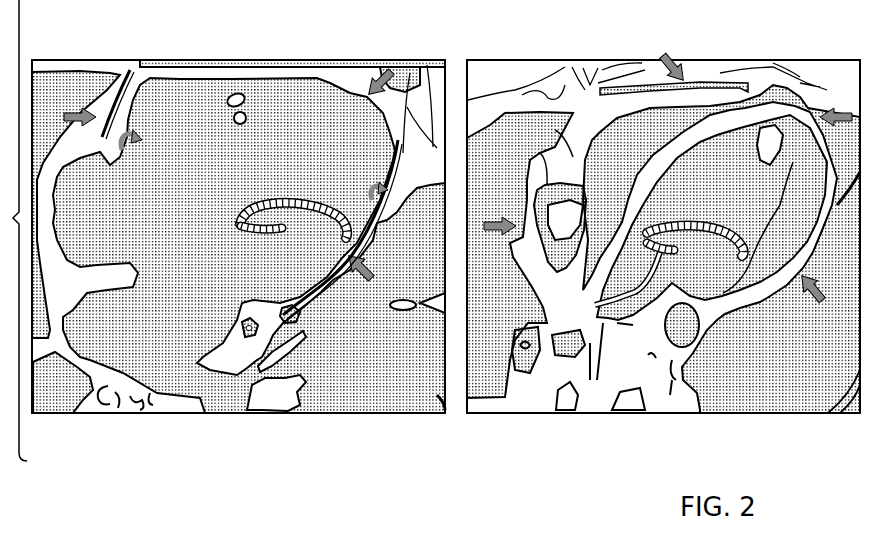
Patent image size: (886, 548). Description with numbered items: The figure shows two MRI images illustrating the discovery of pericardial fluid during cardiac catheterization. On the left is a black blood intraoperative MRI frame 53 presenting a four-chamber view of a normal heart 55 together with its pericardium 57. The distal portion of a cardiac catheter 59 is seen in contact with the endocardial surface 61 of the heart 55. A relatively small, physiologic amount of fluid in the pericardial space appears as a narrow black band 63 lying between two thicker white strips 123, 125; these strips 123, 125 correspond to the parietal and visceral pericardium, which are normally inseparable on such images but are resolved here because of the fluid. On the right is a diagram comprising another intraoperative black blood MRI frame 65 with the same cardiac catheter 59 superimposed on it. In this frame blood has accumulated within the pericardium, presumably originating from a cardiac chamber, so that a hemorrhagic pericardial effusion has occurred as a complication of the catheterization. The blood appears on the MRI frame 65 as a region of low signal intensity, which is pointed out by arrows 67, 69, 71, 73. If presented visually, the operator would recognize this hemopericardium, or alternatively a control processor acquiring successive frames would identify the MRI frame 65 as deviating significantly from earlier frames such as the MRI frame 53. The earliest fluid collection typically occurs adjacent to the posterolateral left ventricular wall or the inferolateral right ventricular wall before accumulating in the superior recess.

The black blood intraoperative MRI frame 53 is at (126, 430).
The heart 55 is at (276, 77).
The pericardium 57 is at (67, 347).
The cardiac catheter 59 is at (332, 200).
The endocardial surface 61 is at (316, 246).
The narrow black band 63 is at (333, 282).
The intraoperative black blood MRI frame 65 is at (524, 433).
The arrow 67 is at (496, 218).
The arrow 69 is at (670, 55).
The arrow 71 is at (838, 108).
The arrow 73 is at (818, 298).
The white strip 123 is at (410, 70).
The white strip 125 is at (372, 68).